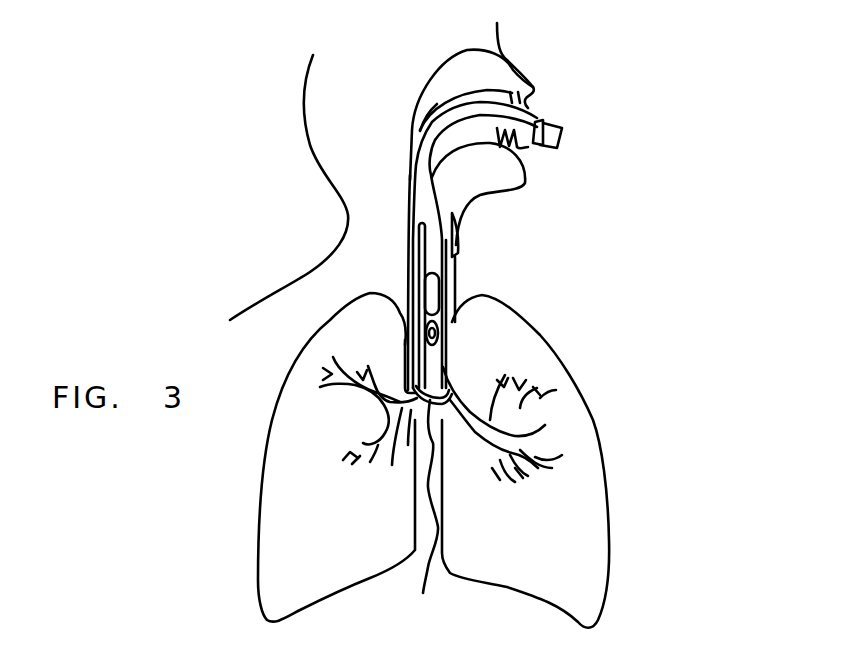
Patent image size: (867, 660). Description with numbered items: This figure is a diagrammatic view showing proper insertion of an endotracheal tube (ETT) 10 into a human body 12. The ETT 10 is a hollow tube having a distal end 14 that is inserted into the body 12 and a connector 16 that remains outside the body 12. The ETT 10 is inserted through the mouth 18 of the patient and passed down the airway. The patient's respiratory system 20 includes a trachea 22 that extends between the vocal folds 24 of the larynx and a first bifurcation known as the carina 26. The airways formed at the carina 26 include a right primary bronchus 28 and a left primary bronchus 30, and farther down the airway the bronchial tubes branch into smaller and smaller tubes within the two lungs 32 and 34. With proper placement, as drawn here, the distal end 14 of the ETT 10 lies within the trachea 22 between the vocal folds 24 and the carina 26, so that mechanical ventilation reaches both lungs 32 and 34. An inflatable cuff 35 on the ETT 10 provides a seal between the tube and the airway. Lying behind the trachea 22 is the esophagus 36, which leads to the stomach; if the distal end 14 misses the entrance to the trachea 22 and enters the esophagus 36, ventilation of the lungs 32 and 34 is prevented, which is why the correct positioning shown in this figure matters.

The endotracheal tube 10 is at (422, 150).
The human body 12 is at (462, 243).
The distal end 14 is at (425, 335).
The connector 16 is at (538, 115).
The mouth 18 is at (522, 103).
The respiratory system 20 is at (533, 353).
The trachea 22 is at (450, 317).
The vocal folds 24 is at (462, 240).
The carina 26 is at (423, 593).
The right primary bronchus 28 is at (392, 465).
The left primary bronchus 30 is at (480, 427).
The lung 32 is at (305, 437).
The lung 34 is at (547, 453).
The inflatable cuff 35 is at (430, 303).
The esophagus 36 is at (407, 270).